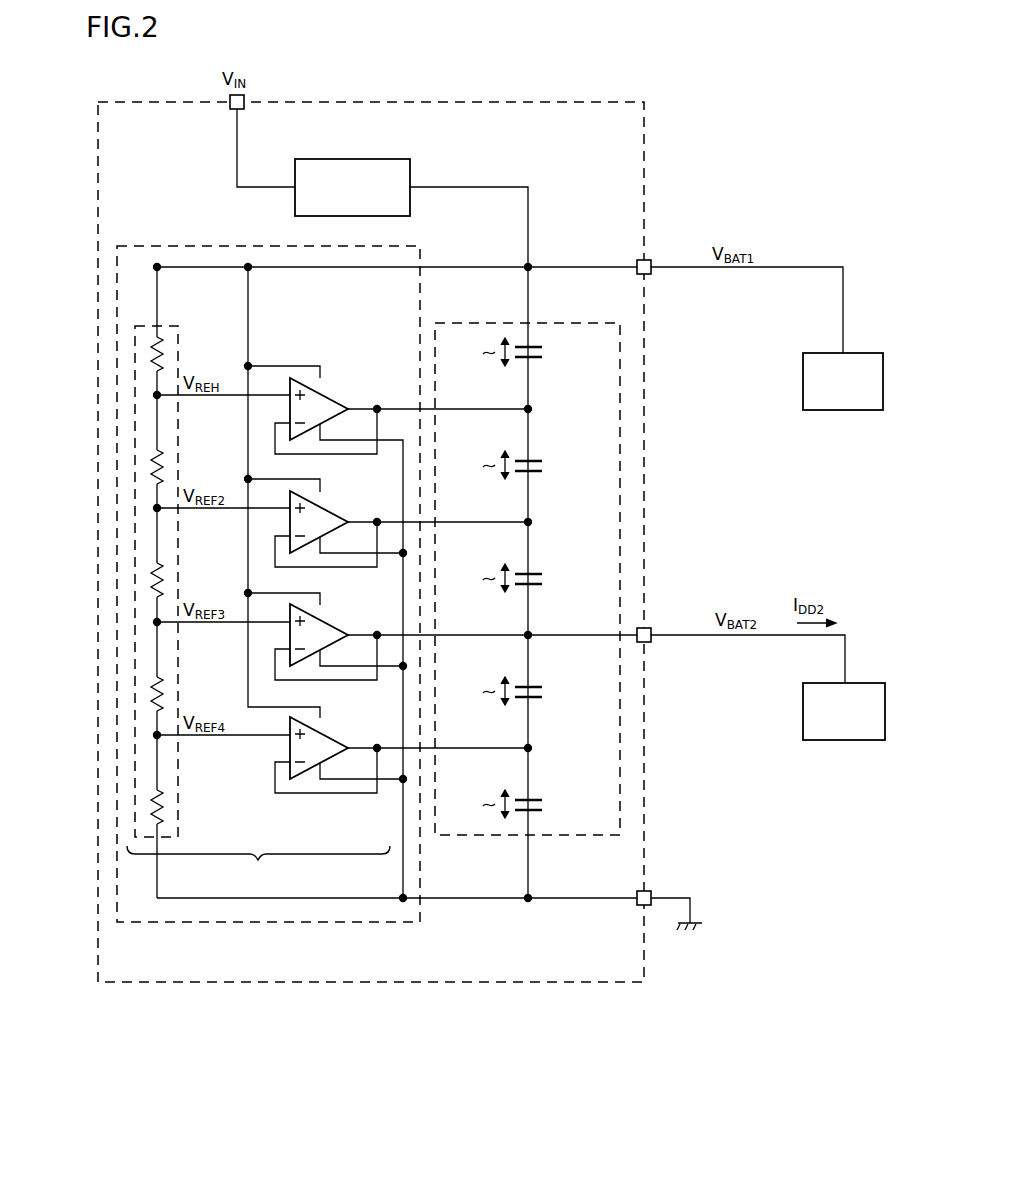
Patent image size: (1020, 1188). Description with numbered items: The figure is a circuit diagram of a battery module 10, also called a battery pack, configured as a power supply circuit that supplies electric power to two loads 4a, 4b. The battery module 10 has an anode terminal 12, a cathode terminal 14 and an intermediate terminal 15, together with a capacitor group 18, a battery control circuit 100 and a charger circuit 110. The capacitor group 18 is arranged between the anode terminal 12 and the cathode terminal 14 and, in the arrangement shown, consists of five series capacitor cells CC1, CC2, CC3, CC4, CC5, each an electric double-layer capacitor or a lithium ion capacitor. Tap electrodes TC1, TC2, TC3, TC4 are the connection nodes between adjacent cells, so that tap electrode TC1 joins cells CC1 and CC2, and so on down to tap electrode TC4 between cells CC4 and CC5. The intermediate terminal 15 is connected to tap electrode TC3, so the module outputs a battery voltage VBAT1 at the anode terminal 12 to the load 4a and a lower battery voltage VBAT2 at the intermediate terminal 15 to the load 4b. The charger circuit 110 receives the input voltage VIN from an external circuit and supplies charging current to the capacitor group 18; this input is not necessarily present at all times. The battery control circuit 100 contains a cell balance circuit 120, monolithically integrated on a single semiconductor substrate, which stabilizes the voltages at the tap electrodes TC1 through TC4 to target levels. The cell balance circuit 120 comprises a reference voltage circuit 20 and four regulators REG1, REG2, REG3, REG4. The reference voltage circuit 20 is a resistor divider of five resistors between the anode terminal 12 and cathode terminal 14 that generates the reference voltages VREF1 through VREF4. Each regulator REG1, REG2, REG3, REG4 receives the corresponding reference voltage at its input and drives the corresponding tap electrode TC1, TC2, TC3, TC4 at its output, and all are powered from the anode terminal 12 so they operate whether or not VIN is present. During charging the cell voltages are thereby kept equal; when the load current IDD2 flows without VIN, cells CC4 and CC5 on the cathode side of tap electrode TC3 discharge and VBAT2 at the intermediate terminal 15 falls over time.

The battery module 10 is at (385, 982).
The battery control circuit 100 is at (292, 922).
The charger circuit 110 is at (378, 159).
The anode terminal 12 is at (651, 262).
The intermediate terminal 15 is at (651, 630).
The cathode terminal 14 is at (651, 893).
The capacitor group 18 is at (588, 323).
The reference voltage circuit 20 is at (178, 816).
The cell balance circuit 120 is at (258, 871).
The load 4a is at (853, 411).
The load 4b is at (853, 741).
The regulator REG1 is at (334, 402).
The regulator REG2 is at (334, 515).
The regulator REG3 is at (334, 628).
The regulator REG4 is at (334, 741).
The capacitor cell CC1 is at (552, 354).
The capacitor cell CC2 is at (552, 467).
The capacitor cell CC3 is at (552, 580).
The capacitor cell CC4 is at (552, 693).
The capacitor cell CC5 is at (552, 806).
The tap electrode TC1 is at (532, 408).
The tap electrode TC2 is at (532, 521).
The tap electrode TC3 is at (532, 634).
The tap electrode TC4 is at (532, 747).